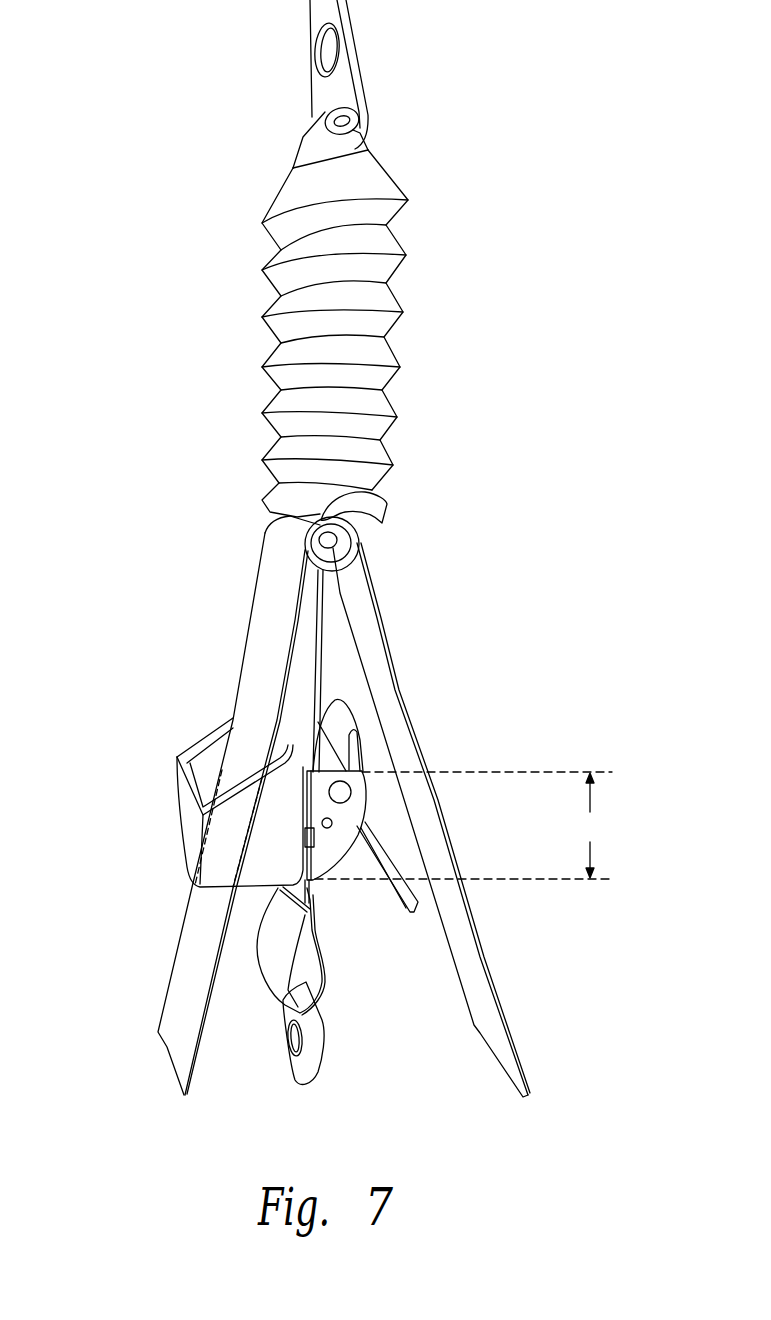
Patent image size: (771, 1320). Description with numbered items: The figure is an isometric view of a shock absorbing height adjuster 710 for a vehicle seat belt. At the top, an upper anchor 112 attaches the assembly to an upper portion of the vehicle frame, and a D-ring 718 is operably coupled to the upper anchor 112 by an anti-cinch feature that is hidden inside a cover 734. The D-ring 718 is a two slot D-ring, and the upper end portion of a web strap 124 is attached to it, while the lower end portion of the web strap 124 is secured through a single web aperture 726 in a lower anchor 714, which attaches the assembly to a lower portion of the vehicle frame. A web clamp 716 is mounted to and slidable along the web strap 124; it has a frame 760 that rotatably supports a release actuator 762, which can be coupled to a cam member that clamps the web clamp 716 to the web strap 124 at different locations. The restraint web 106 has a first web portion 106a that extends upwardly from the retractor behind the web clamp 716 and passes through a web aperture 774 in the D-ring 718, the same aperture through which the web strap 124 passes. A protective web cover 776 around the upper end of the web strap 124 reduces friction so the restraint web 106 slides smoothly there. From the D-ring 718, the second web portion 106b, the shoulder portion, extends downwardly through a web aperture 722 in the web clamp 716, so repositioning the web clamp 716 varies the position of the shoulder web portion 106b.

The shock absorbing height adjuster 710 is at (162, 643).
The upper anchor 112 is at (360, 63).
The cover 734 is at (397, 240).
The web aperture 774 is at (382, 508).
The D-ring 718 is at (359, 540).
The web strap 124 is at (315, 638).
The protective web cover 776 is at (283, 575).
The restraint web 106 is at (358, 806).
The first web portion 106a is at (507, 1033).
The second web portion 106b is at (189, 805).
The web aperture 722 is at (200, 752).
The web clamp 716 is at (458, 814).
The frame 760 is at (368, 816).
The release actuator 762 is at (410, 897).
The web aperture 726 is at (322, 1047).
The lower anchor 714 is at (313, 1068).